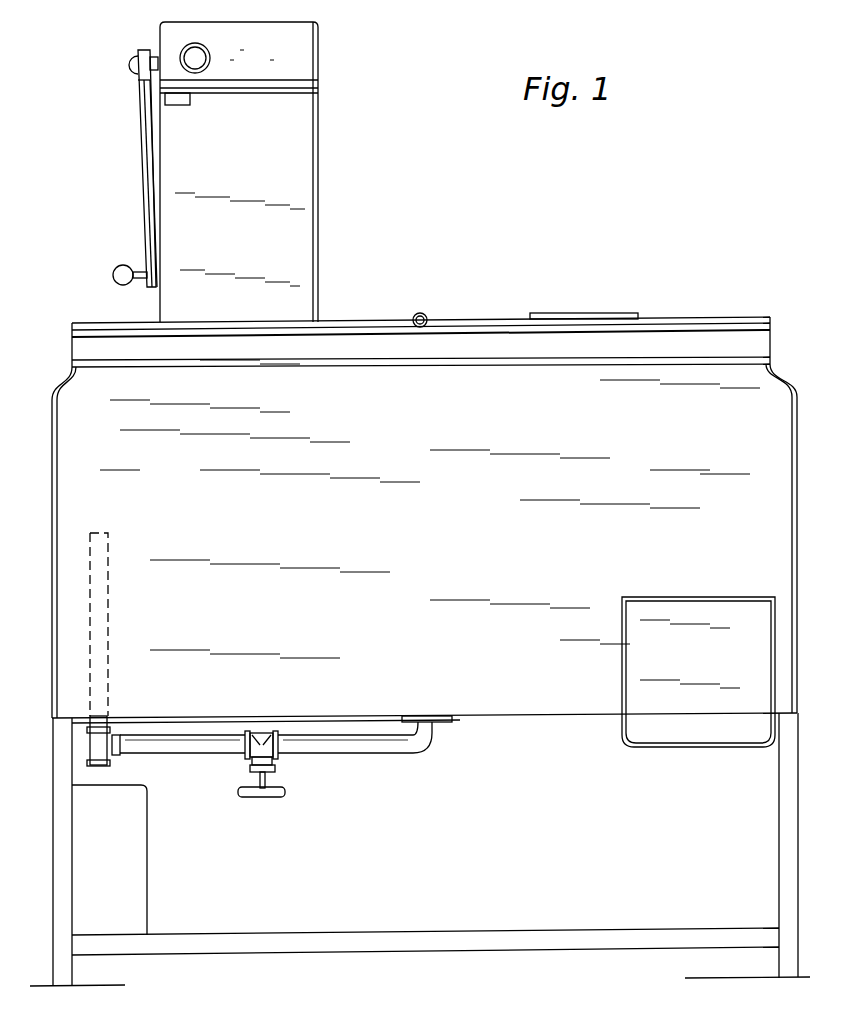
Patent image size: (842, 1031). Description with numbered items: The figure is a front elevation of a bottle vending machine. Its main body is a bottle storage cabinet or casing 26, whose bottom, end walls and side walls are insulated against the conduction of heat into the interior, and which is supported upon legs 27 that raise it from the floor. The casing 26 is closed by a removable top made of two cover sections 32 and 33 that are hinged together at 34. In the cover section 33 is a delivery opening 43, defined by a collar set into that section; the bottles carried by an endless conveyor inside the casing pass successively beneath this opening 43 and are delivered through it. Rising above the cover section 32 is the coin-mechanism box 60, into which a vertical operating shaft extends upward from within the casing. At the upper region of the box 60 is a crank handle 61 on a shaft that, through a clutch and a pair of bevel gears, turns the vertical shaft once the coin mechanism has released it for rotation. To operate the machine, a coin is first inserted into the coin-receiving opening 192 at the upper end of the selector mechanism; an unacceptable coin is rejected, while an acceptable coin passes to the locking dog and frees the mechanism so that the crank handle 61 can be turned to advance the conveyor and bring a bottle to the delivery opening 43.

The bottle storage cabinet 26 is at (424, 553).
The legs 27 is at (779, 835).
The cover section 32 is at (377, 322).
The cover section 33 is at (492, 322).
The hinge 34 is at (431, 291).
The delivery opening 43 is at (616, 293).
The coin-mechanism box 60 is at (310, 184).
The crank handle 61 is at (146, 207).
The coin-receiving opening 192 is at (196, 45).